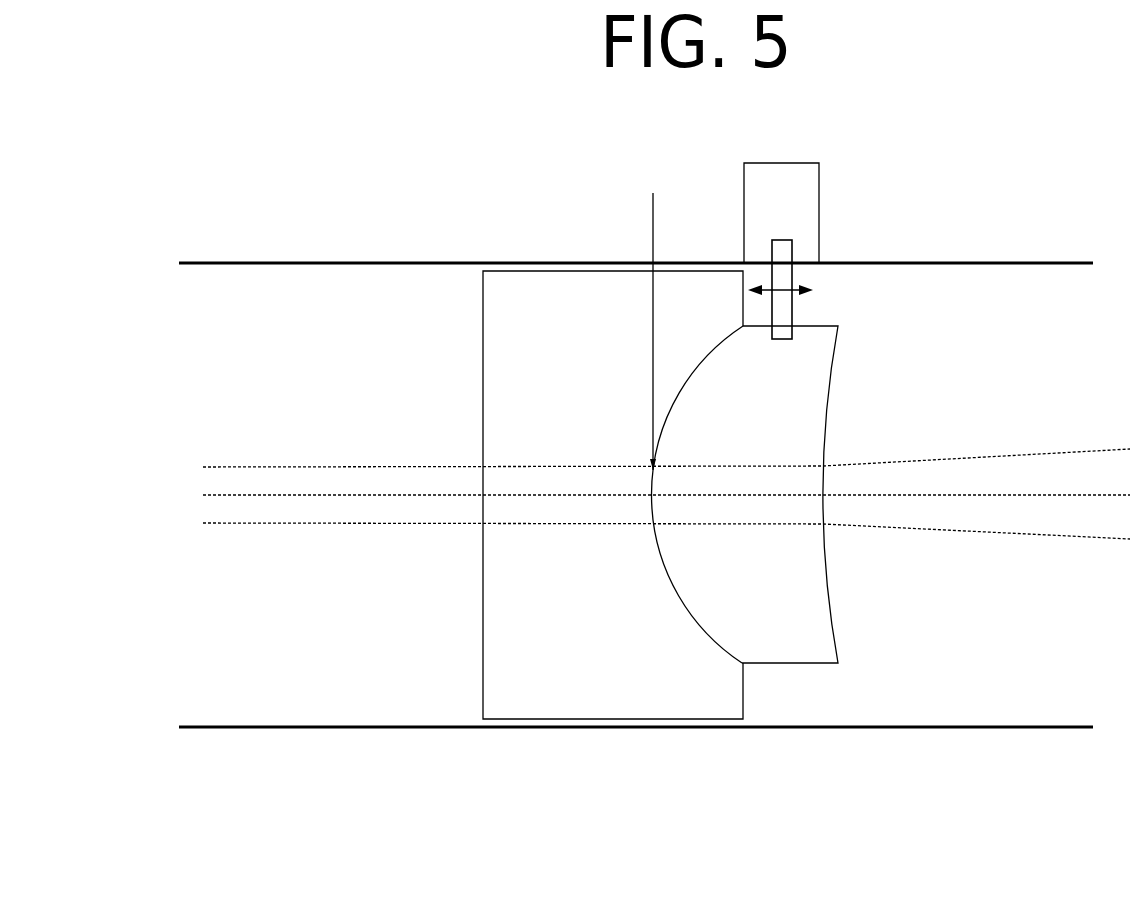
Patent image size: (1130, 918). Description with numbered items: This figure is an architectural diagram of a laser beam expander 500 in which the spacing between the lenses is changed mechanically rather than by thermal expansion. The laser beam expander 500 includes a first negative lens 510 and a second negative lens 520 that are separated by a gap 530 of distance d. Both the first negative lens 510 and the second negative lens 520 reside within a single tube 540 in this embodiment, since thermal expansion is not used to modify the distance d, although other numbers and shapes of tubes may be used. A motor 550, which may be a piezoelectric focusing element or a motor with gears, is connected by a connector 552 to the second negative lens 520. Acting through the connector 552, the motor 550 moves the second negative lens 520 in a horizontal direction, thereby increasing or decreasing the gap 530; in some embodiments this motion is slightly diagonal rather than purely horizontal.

The laser beam expander 500 is at (252, 123).
The first negative lens 510 is at (603, 715).
The second negative lens 520 is at (625, 589).
The gap 530 is at (655, 532).
The single tube 540 is at (1002, 263).
The motor 550 is at (819, 213).
The connector 552 is at (793, 305).